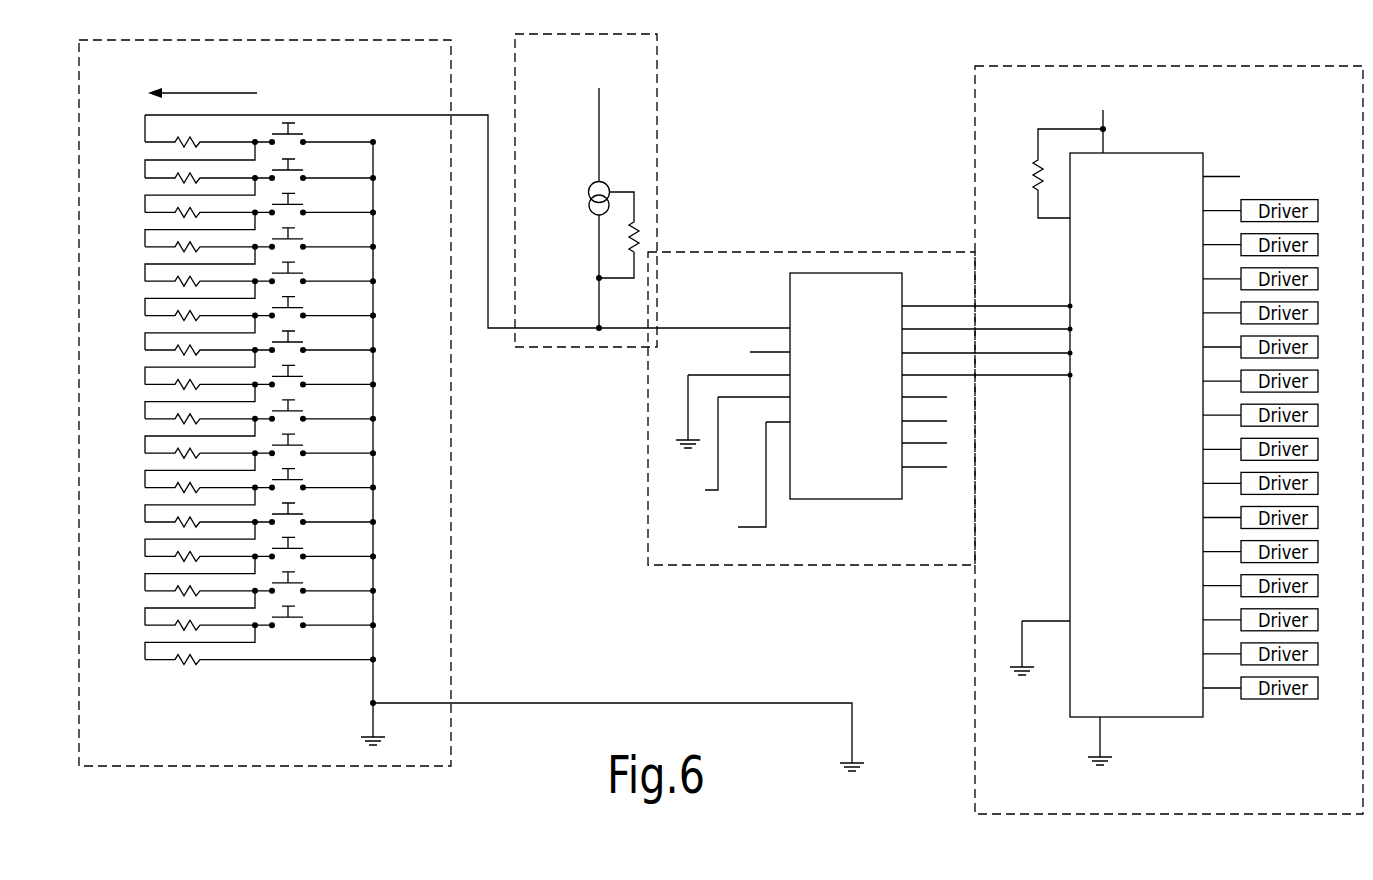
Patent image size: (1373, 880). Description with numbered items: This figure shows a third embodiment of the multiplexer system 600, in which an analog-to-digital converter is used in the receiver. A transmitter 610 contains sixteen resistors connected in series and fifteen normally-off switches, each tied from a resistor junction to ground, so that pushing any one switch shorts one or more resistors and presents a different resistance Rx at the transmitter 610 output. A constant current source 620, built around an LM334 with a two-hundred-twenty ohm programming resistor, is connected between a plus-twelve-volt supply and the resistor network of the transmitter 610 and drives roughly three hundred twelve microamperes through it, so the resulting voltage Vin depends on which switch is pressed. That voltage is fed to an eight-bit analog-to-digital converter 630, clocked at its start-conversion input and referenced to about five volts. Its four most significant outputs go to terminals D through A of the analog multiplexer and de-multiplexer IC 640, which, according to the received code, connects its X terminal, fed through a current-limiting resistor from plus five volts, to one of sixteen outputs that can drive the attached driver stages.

The multi-switch control system 600 is at (617, 545).
The transmitter 610 is at (415, 105).
The constant current source 620 is at (633, 120).
The analog-to-digital converter 630 is at (675, 461).
The analog multiplexer and de-multiplexer IC 640 is at (1018, 130).